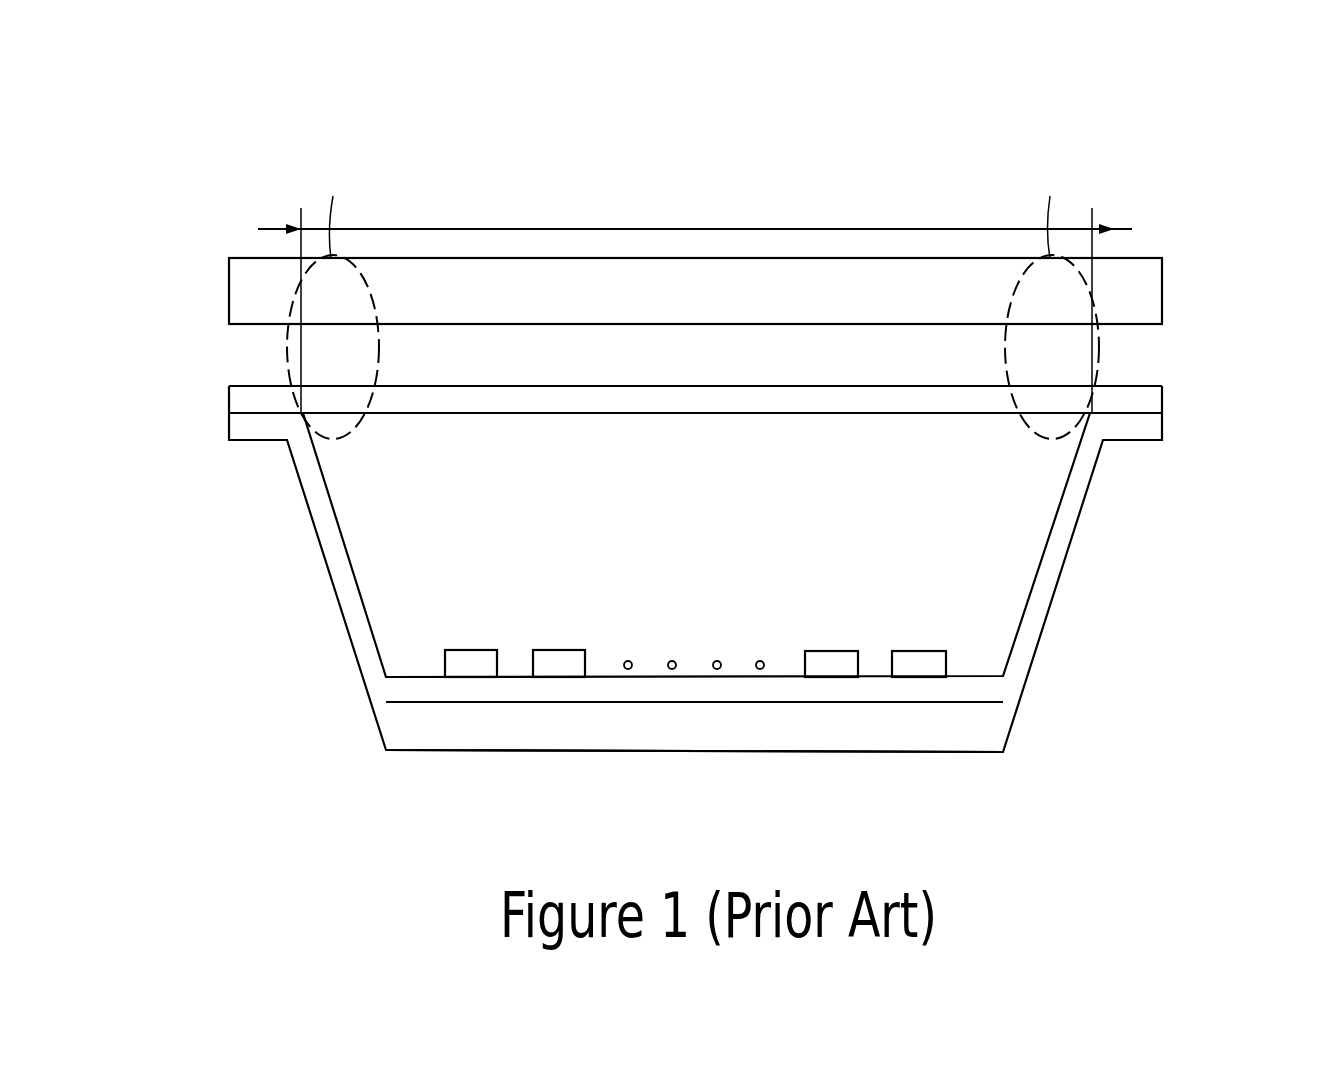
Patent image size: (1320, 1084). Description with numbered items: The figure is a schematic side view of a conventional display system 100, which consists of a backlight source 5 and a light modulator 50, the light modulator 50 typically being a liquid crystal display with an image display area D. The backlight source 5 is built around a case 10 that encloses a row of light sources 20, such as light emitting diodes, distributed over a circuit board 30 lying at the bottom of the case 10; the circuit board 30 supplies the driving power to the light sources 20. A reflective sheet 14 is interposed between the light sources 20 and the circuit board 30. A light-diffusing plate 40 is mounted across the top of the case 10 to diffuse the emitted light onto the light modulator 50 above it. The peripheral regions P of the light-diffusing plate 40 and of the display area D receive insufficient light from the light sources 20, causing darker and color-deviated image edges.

The display system 100 is at (160, 62).
The light modulator 50 is at (1160, 287).
The light-diffusing plate 40 is at (1150, 398).
The case 10 is at (1057, 553).
The light sources 20 is at (463, 648).
The reflective sheet 14 is at (640, 693).
The circuit board 30 is at (808, 731).
The backlight source 5 is at (661, 604).